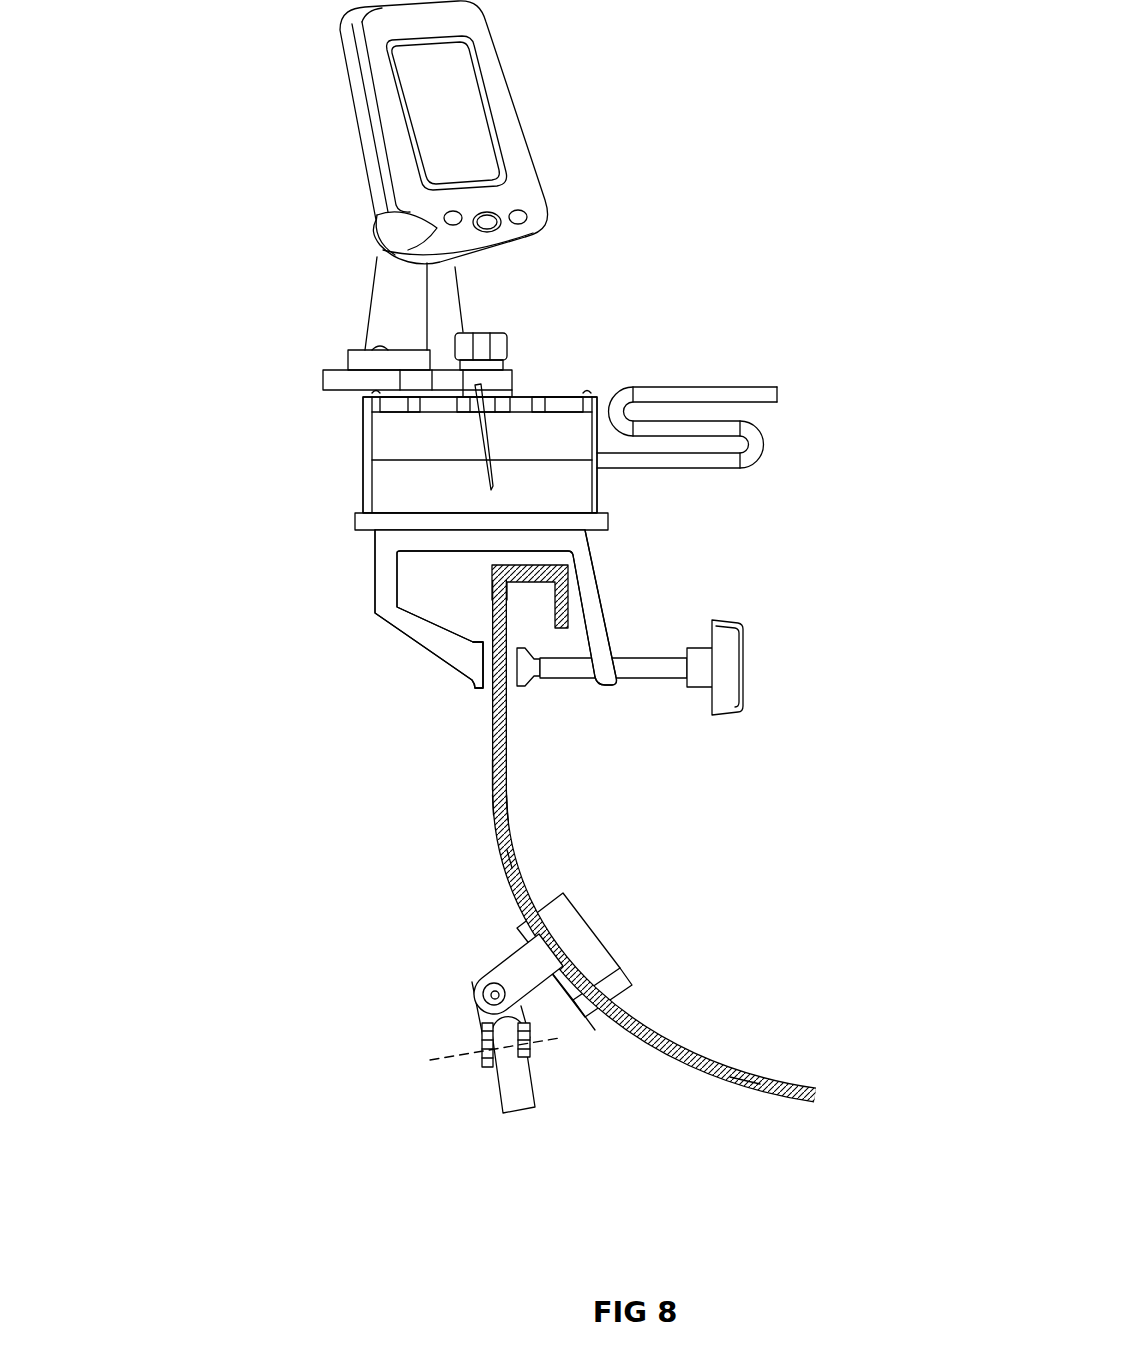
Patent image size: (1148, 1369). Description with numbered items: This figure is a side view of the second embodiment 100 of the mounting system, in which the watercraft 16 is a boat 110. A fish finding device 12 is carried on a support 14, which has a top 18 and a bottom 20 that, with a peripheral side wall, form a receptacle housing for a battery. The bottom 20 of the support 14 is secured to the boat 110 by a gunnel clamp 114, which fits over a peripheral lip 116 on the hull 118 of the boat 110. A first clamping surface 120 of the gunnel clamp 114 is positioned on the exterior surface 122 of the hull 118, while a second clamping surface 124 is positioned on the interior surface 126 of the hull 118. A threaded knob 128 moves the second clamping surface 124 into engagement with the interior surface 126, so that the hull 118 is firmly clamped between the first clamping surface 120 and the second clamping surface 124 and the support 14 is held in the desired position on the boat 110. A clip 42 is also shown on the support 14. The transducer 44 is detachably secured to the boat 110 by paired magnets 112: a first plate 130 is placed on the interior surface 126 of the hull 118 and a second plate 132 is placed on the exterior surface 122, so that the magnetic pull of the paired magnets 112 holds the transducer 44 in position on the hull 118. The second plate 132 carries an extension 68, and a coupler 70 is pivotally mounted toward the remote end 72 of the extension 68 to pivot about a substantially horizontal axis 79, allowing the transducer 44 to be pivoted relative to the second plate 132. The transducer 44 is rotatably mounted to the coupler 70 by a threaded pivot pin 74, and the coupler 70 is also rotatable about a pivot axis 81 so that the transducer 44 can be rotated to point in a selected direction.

The fish finding device 12 is at (513, 80).
The support 14 is at (390, 484).
The watercraft 16 is at (734, 1084).
The top 18 is at (525, 398).
The bottom 20 is at (373, 531).
The clip 42 is at (703, 384).
The transducer 44 is at (513, 1082).
The extension 68 is at (520, 965).
The coupler 70 is at (475, 1023).
The remote end 72 is at (478, 1007).
The threaded pivot pin 74 is at (500, 997).
The substantially horizontal axis 79 is at (481, 990).
The pivot axis 81 is at (437, 1060).
The second embodiment 100 is at (277, 1148).
The boat 110 is at (491, 745).
The paired magnets 112 is at (517, 915).
The gunnel clamp 114 is at (337, 630).
The peripheral lip 116 is at (540, 570).
The hull 118 is at (504, 774).
The first clamping surface 120 is at (478, 688).
The exterior surface 122 is at (493, 805).
The second clamping surface 124 is at (528, 682).
The interior surface 126 is at (516, 827).
The threaded knob 128 is at (735, 693).
The first plate 130 is at (587, 932).
The second plate 132 is at (577, 1010).